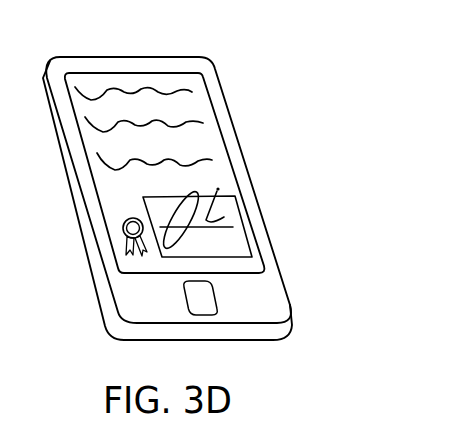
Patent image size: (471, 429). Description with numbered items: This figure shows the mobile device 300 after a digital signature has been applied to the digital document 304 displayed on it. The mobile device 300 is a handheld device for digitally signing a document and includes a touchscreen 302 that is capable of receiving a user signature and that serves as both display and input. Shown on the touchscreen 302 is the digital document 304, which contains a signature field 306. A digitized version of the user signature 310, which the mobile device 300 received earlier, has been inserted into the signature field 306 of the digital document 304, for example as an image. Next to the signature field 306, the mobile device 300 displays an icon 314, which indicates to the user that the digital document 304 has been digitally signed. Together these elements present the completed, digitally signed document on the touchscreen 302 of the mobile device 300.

The mobile device 300 is at (130, 52).
The touchscreen 302 is at (262, 274).
The digital document 304 is at (202, 148).
The signature field 306 is at (235, 200).
The user signature 310 is at (178, 205).
The icon 314 is at (124, 248).